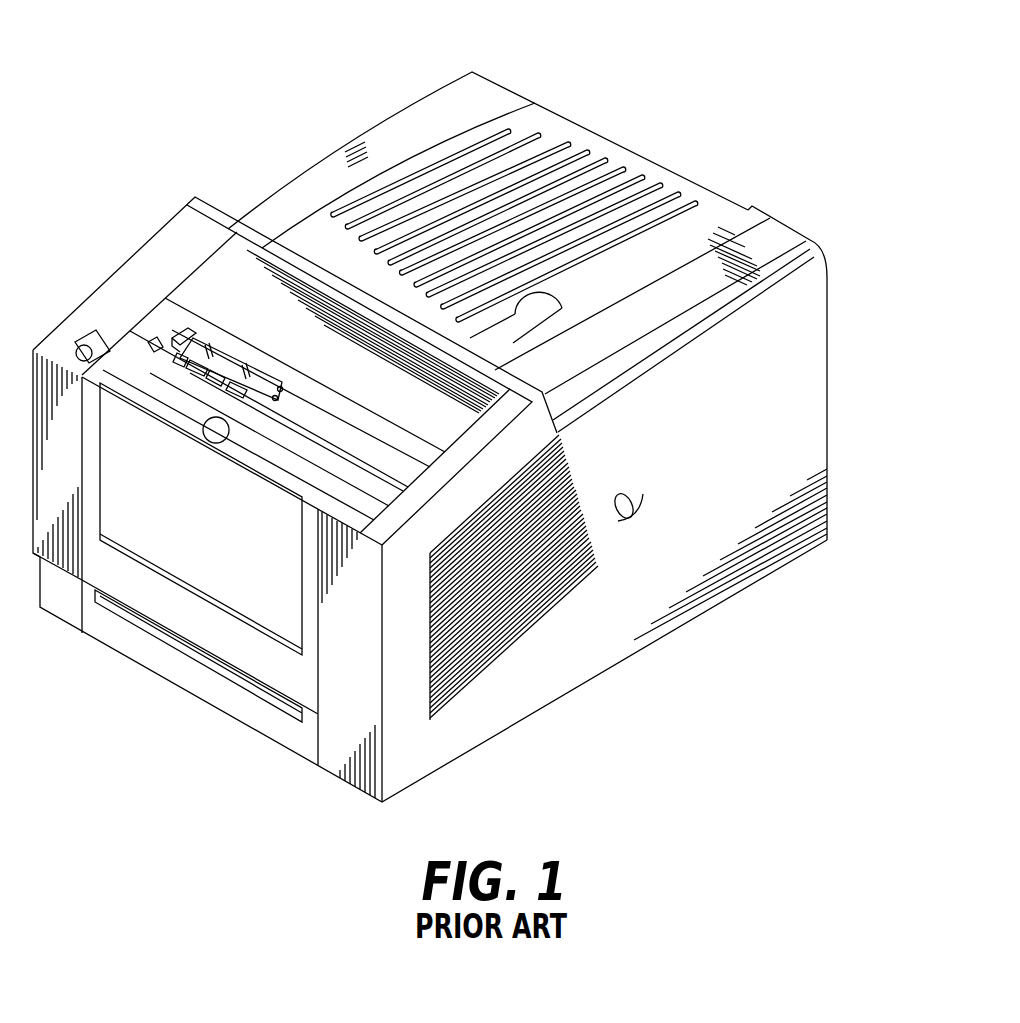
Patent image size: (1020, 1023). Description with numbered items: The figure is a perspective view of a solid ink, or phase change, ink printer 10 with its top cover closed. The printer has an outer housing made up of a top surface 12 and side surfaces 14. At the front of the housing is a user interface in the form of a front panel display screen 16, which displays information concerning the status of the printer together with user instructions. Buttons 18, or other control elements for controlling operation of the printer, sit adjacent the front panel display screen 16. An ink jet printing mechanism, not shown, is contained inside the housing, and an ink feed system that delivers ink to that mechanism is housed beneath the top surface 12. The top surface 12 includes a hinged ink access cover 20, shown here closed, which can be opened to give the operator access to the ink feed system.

The phase change ink printer 10 is at (830, 195).
The top surface 12 is at (757, 218).
The side surfaces 14 is at (810, 363).
The front panel display screen 16 is at (192, 335).
The buttons 18 is at (152, 343).
The ink access cover 20 is at (525, 110).